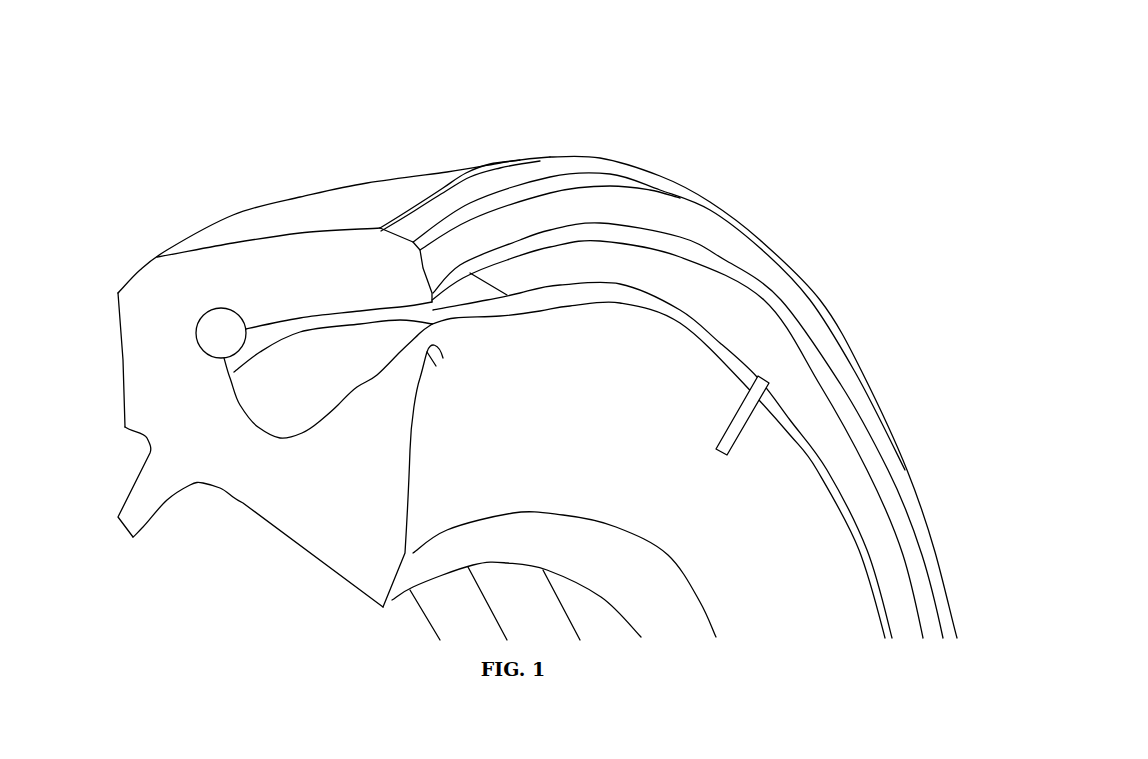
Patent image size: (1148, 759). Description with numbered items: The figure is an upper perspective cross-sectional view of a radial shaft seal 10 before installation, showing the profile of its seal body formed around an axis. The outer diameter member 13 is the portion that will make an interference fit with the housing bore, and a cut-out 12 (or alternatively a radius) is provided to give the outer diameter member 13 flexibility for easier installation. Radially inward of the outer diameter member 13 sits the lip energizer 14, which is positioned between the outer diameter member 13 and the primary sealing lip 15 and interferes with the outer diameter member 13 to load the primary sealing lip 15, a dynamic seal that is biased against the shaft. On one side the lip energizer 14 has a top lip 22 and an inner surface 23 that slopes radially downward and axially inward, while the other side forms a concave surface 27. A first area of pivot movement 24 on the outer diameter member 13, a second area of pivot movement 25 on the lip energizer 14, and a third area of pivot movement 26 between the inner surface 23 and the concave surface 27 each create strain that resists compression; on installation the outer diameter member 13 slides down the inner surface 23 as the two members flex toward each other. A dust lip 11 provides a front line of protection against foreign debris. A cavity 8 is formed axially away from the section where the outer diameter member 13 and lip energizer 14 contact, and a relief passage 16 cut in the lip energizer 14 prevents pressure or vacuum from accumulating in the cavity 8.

The radial shaft seal 10 is at (742, 105).
The cavity 8 is at (295, 407).
The dust lip 11 is at (136, 539).
The cut-out 12 is at (214, 335).
The outer diameter member 13 is at (330, 200).
The lip energizer 14 is at (443, 358).
The primary sealing lip 15 is at (400, 598).
The relief passage 16 is at (750, 423).
The top lip 22 is at (507, 324).
The inner surface 23 is at (338, 410).
The first area of pivot movement 24 is at (160, 291).
The second area of pivot movement 25 is at (229, 479).
The third area of pivot movement 26 is at (373, 467).
The concave surface 27 is at (412, 500).